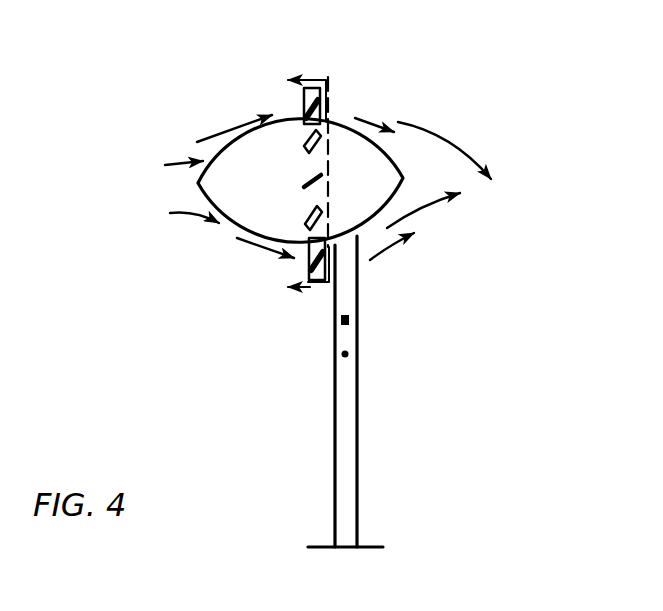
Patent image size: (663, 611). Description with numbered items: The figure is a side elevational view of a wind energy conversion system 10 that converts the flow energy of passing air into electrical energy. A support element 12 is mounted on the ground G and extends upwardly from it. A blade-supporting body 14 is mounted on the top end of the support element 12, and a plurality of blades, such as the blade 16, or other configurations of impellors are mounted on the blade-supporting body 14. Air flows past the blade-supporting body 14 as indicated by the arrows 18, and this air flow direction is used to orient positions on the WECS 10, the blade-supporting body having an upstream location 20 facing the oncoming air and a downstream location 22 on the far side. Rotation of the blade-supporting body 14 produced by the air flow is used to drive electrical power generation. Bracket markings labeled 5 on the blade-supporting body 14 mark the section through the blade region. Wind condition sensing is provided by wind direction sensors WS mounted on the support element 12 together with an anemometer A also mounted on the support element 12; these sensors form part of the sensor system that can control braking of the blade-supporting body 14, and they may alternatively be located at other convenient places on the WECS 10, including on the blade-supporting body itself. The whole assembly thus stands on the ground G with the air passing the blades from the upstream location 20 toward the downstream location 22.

The wind energy conversion system 10 is at (497, 278).
The support element 12 is at (350, 410).
The blade-supporting body 14 is at (334, 146).
The blade 16 is at (313, 86).
The section line indicator for FIG. 5 is at (319, 193).
The arrows indicating air flow 18 is at (175, 213).
The upstream location 20 is at (212, 158).
The downstream location 22 is at (406, 160).
The wind direction sensors WS is at (350, 321).
The anemometer A is at (350, 358).
The ground G is at (378, 543).